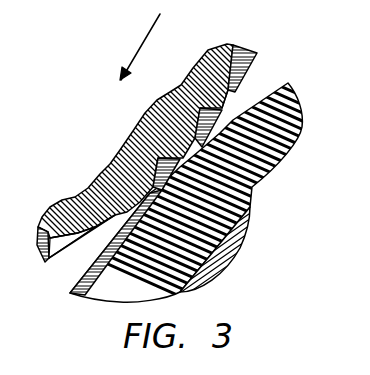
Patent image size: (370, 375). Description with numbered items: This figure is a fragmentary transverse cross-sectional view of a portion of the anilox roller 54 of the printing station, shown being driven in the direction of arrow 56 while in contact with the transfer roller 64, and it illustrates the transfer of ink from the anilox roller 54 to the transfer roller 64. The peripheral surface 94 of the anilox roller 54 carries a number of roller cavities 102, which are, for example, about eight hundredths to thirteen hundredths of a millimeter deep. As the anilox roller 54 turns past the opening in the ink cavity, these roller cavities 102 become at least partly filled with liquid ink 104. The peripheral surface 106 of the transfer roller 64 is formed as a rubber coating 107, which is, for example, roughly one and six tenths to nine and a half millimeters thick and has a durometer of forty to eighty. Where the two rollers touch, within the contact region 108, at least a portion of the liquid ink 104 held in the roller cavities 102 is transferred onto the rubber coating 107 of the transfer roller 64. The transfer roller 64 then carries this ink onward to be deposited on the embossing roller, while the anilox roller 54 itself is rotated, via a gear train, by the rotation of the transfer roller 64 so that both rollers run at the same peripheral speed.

The anilox roller 54 is at (98, 188).
The arrow 56 is at (143, 44).
The transfer roller 64 is at (300, 110).
The peripheral surface 94 is at (46, 262).
The roller cavities 102 is at (67, 236).
The liquid ink 104 is at (250, 72).
The peripheral surface 106 is at (258, 95).
The rubber coating 107 is at (263, 178).
The contact region 108 is at (177, 175).